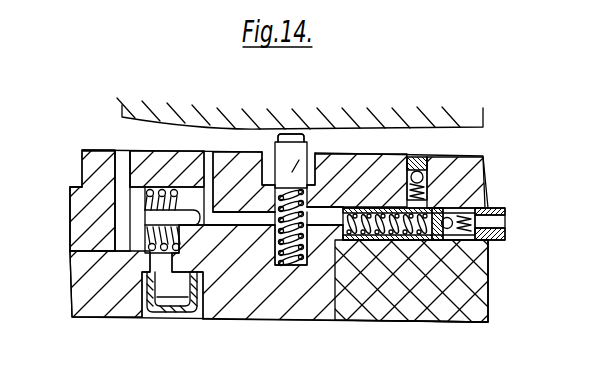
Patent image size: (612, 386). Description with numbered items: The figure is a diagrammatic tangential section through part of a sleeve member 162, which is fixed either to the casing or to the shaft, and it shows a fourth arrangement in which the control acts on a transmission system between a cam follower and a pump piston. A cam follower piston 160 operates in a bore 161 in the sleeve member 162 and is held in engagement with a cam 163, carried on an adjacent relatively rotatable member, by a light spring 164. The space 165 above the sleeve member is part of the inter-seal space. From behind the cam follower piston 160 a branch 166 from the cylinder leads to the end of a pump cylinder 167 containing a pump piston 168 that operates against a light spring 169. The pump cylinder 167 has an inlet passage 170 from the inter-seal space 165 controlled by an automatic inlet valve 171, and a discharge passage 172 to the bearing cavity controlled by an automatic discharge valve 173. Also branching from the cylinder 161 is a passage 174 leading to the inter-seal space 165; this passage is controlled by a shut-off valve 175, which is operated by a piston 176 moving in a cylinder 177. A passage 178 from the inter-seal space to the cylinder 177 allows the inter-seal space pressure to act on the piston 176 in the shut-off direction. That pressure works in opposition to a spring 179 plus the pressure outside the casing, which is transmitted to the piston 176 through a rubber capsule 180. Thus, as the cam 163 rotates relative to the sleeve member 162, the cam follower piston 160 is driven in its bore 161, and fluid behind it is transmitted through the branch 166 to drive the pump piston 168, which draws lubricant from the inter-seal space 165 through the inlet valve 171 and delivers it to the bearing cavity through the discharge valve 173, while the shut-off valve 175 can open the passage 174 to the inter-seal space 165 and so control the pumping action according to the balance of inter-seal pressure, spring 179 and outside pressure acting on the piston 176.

The cam follower piston 160 is at (327, 124).
The bore 161 is at (262, 152).
The sleeve member 162 is at (486, 194).
The cam 163 is at (455, 128).
The light spring 164 is at (283, 262).
The inter-seal space 165 is at (381, 139).
The branch 166 is at (314, 226).
The pump cylinder 167 is at (437, 301).
The pump piston 168 is at (366, 235).
The light spring 169 is at (488, 311).
The inlet passage 170 is at (416, 171).
The automatic inlet valve 171 is at (426, 178).
The discharge passage 172 is at (500, 223).
The automatic discharge valve 173 is at (478, 245).
The passage 174 is at (231, 226).
The shut-off valve 175 is at (186, 212).
The piston 176 is at (138, 207).
The cylinder 177 is at (162, 190).
The passage 178 is at (110, 160).
The spring 179 is at (158, 238).
The rubber capsule 180 is at (160, 311).